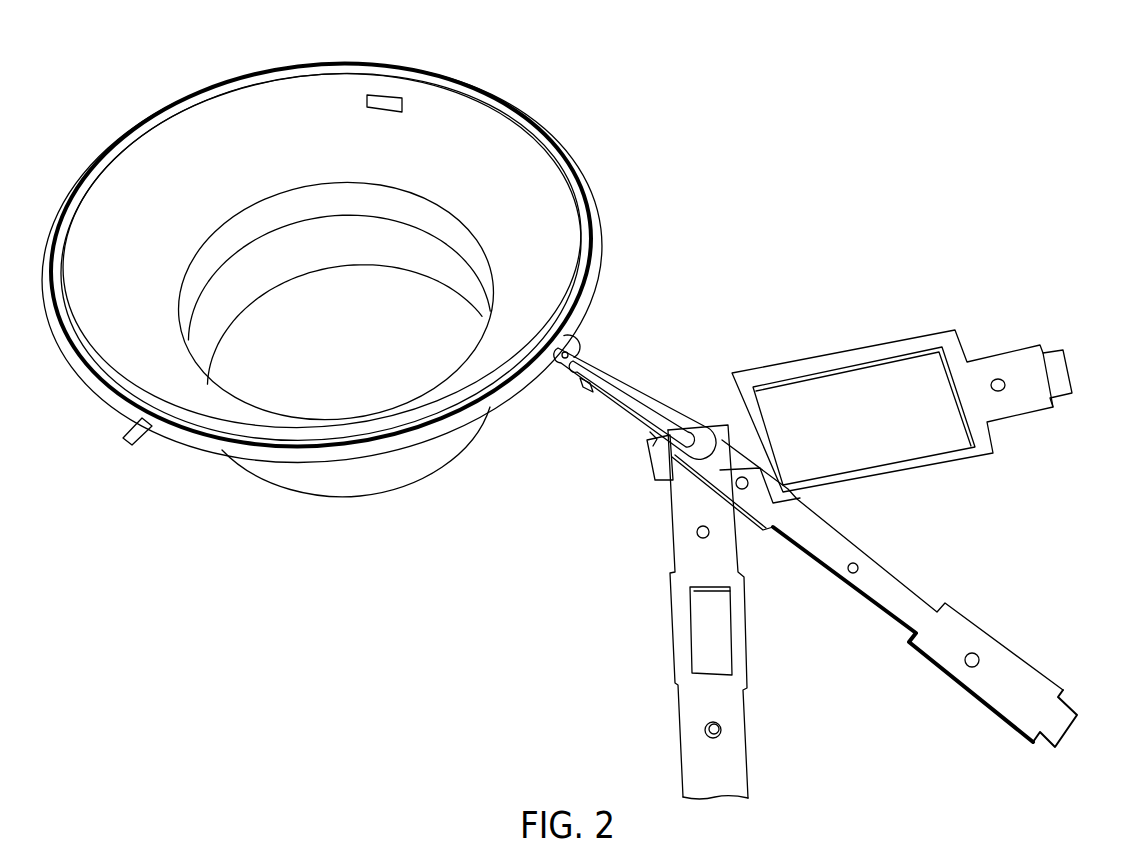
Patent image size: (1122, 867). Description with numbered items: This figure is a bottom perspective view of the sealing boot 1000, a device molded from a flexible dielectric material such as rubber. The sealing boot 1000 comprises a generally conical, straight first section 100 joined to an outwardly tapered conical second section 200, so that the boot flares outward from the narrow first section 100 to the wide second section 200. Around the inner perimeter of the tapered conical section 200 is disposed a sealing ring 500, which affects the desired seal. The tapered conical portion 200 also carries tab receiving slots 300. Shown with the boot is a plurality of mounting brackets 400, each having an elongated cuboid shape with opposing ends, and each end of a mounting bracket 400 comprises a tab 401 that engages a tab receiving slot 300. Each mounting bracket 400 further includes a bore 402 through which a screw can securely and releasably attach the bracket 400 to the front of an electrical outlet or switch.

The sealing boot 1000 is at (585, 101).
The first section 100 is at (337, 483).
The second section 200 is at (472, 117).
The tab receiving slot 300 is at (383, 95).
The sealing ring 500 is at (587, 205).
The mounting bracket 400 is at (852, 357).
The tab 401 is at (1058, 368).
The bore 402 is at (1003, 392).